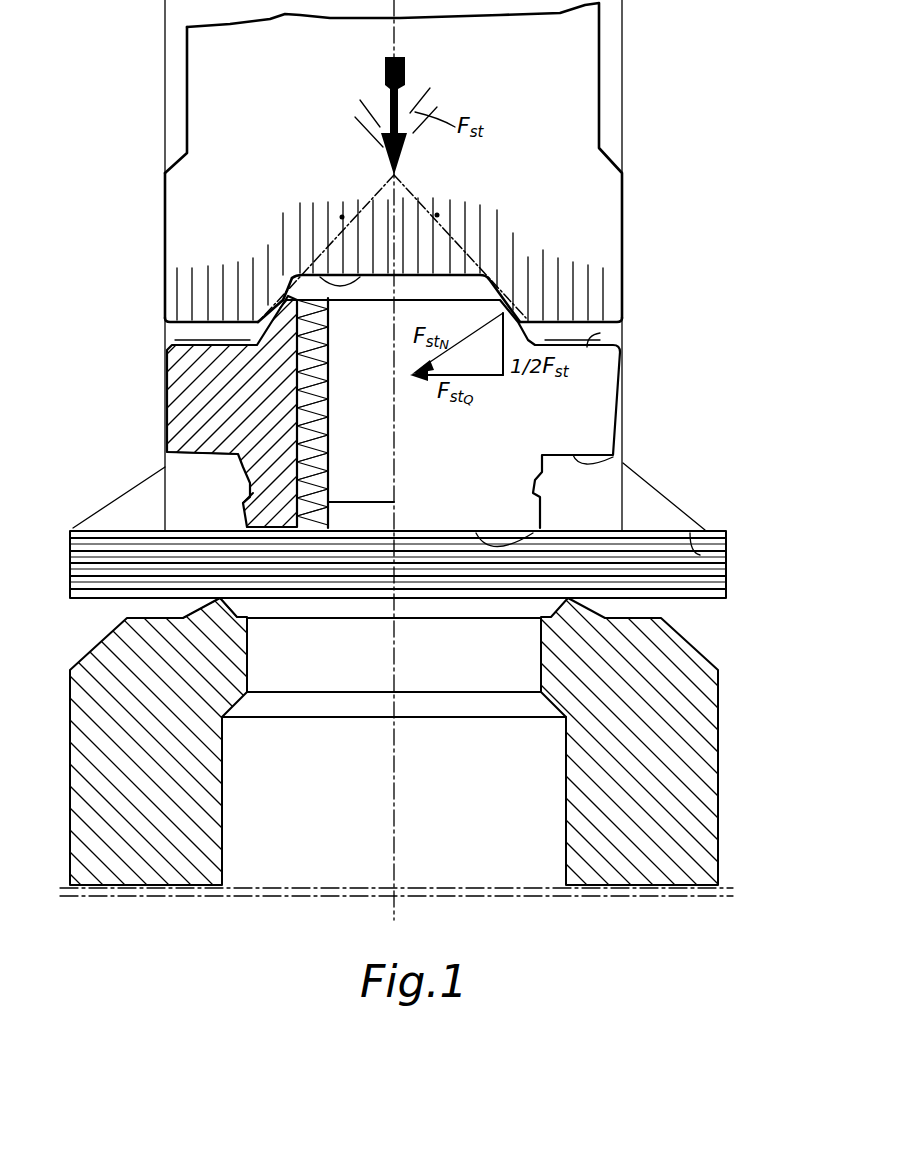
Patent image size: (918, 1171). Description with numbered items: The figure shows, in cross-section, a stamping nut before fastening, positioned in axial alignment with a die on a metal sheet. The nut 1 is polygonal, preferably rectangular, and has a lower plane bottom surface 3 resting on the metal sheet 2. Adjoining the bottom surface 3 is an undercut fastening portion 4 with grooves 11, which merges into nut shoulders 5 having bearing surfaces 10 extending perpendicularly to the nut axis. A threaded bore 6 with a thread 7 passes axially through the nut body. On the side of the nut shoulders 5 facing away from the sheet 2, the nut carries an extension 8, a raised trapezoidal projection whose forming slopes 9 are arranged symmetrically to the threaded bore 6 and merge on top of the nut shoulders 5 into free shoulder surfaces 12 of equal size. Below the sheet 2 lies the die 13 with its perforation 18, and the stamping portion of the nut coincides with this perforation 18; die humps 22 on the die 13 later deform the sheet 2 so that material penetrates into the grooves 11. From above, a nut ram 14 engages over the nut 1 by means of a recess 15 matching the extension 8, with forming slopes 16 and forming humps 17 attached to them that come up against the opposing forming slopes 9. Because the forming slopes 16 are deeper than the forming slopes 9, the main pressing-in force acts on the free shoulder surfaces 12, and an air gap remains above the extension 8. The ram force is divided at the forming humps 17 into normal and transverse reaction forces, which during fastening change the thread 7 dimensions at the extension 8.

The nut 1 is at (500, 433).
The metal sheet 2 is at (703, 525).
The bottom surface 3 is at (538, 530).
The fastening portion 4 is at (247, 482).
The nut shoulders 5 is at (188, 398).
The threaded bore 6 is at (328, 457).
The thread 7 is at (317, 483).
The extension 8 is at (560, 300).
The forming slopes 9 is at (280, 300).
The bearing surfaces 10 is at (590, 473).
The grooves 11 is at (253, 492).
The free shoulder surfaces 12 is at (600, 333).
The die 13 is at (693, 810).
The nut ram 14 is at (575, 117).
The recess 15 is at (313, 277).
The forming slopes 16 is at (283, 298).
The forming humps 17 is at (255, 330).
The perforation 18 is at (247, 647).
The die humps 22 is at (200, 600).